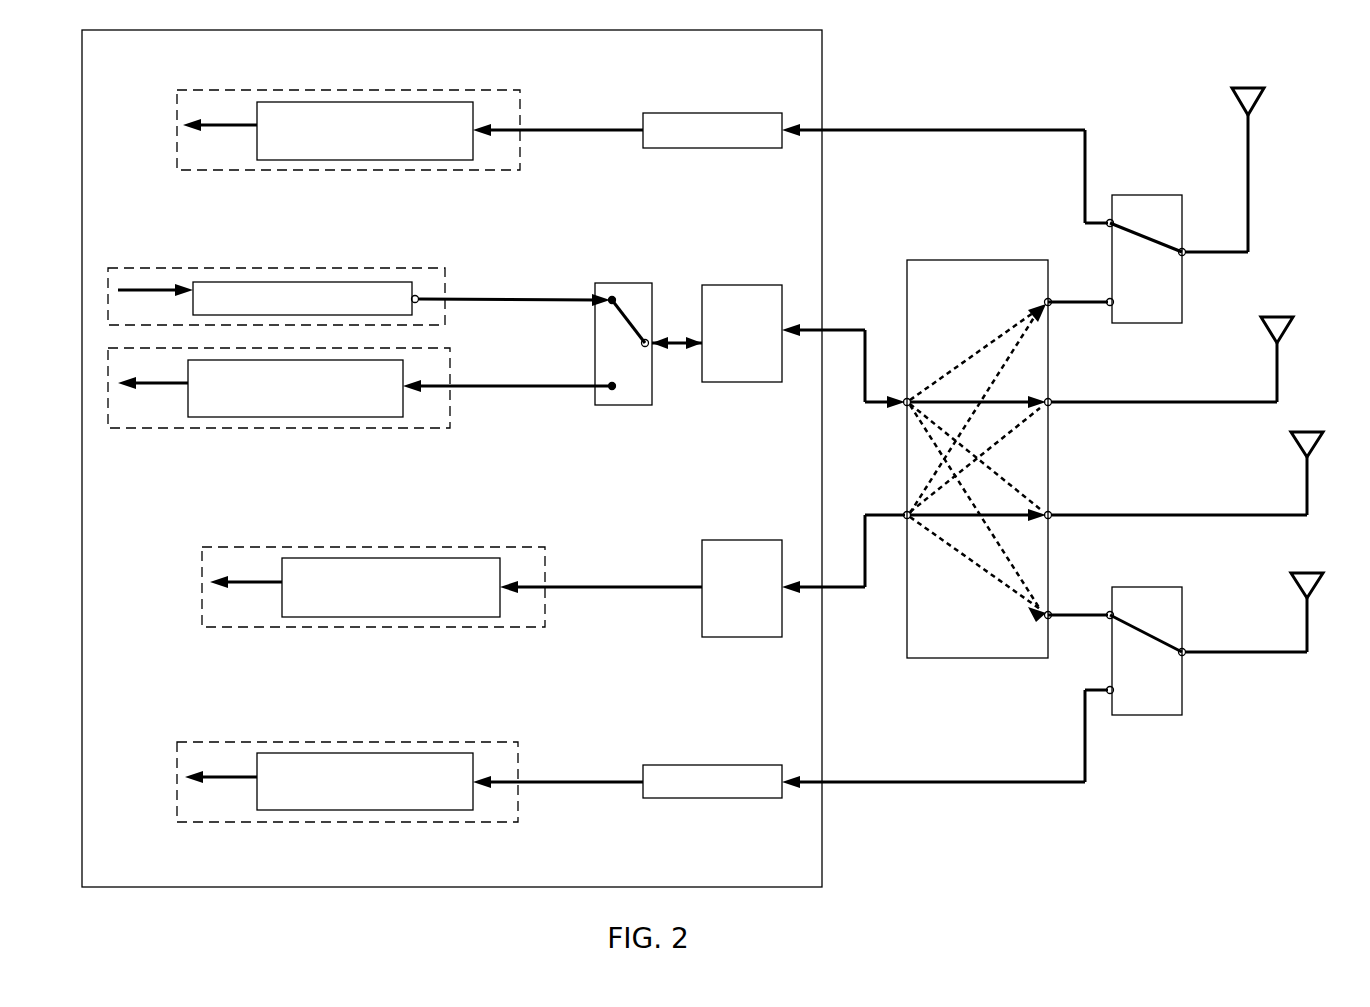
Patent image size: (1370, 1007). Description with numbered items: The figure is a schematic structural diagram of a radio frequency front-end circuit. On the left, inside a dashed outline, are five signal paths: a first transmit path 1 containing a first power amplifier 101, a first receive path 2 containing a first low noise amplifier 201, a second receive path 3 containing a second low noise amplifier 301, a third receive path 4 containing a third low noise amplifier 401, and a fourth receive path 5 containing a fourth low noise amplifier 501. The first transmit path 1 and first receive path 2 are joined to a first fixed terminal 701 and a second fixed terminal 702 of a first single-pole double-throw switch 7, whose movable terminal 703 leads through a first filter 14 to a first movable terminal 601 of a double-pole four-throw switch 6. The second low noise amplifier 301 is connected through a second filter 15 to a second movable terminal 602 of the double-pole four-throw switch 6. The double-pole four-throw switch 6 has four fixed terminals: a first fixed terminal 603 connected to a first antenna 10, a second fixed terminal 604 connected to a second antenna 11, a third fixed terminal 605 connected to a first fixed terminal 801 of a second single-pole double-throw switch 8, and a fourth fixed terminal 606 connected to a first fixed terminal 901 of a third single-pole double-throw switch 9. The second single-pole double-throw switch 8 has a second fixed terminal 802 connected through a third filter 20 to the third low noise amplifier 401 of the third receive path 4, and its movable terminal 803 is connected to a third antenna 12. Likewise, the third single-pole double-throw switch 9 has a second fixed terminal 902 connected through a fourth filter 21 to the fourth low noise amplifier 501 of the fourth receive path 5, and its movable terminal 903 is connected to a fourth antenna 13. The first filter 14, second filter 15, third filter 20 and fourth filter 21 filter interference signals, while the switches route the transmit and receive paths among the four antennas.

The first transmit path 1 is at (190, 268).
The first power amplifier 101 is at (340, 282).
The first receive path 2 is at (200, 428).
The first low noise amplifier 201 is at (352, 417).
The second receive path 3 is at (292, 547).
The second low noise amplifier 301 is at (430, 558).
The third receive path 4 is at (247, 90).
The third low noise amplifier 401 is at (405, 102).
The fourth receive path 5 is at (253, 822).
The fourth low noise amplifier 501 is at (405, 810).
The double-pole four-throw switch 6 is at (957, 260).
The first movable terminal 601 is at (903, 399).
The second movable terminal 602 is at (903, 513).
The first fixed terminal 603 is at (1053, 405).
The second fixed terminal 604 is at (1053, 518).
The third fixed terminal 605 is at (1053, 305).
The fourth fixed terminal 606 is at (1053, 618).
The first single-pole double-throw switch 7 is at (628, 283).
The first fixed terminal 701 is at (605, 298).
The second fixed terminal 702 is at (607, 389).
The movable terminal 703 is at (648, 340).
The second single-pole double-throw switch 8 is at (1158, 195).
The first fixed terminal 801 is at (1107, 300).
The second fixed terminal 802 is at (1107, 220).
The movable terminal 803 is at (1186, 254).
The third single-pole double-throw switch 9 is at (1148, 715).
The first fixed terminal 901 is at (1107, 613).
The second fixed terminal 902 is at (1107, 694).
The movable terminal 903 is at (1186, 650).
The first antenna 10 is at (1292, 317).
The second antenna 11 is at (1322, 432).
The third antenna 12 is at (1265, 88).
The fourth antenna 13 is at (1322, 573).
The first filter 14 is at (740, 383).
The second filter 15 is at (740, 638).
The third filter 20 is at (715, 113).
The fourth filter 21 is at (717, 798).